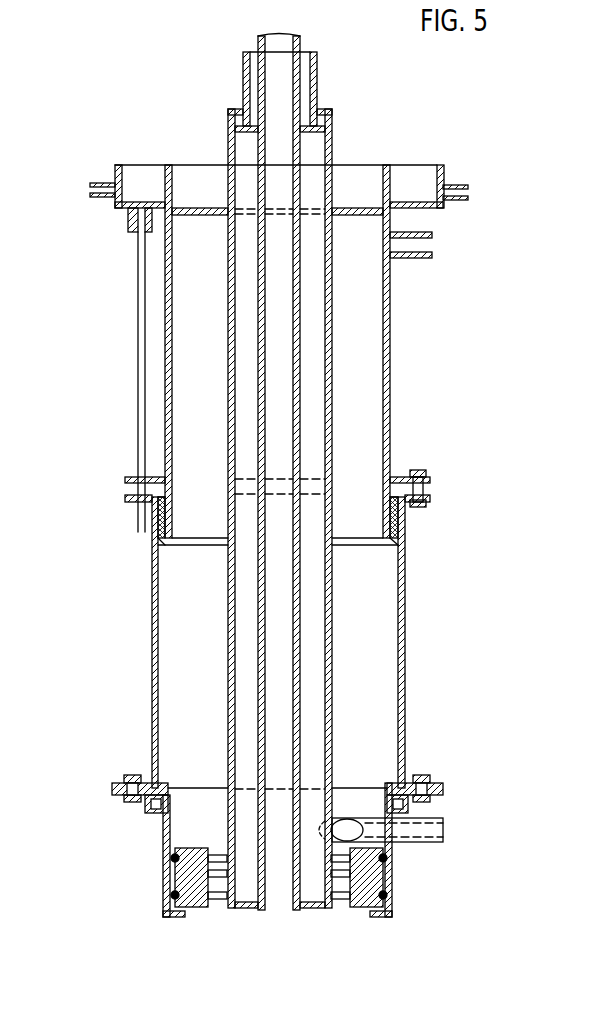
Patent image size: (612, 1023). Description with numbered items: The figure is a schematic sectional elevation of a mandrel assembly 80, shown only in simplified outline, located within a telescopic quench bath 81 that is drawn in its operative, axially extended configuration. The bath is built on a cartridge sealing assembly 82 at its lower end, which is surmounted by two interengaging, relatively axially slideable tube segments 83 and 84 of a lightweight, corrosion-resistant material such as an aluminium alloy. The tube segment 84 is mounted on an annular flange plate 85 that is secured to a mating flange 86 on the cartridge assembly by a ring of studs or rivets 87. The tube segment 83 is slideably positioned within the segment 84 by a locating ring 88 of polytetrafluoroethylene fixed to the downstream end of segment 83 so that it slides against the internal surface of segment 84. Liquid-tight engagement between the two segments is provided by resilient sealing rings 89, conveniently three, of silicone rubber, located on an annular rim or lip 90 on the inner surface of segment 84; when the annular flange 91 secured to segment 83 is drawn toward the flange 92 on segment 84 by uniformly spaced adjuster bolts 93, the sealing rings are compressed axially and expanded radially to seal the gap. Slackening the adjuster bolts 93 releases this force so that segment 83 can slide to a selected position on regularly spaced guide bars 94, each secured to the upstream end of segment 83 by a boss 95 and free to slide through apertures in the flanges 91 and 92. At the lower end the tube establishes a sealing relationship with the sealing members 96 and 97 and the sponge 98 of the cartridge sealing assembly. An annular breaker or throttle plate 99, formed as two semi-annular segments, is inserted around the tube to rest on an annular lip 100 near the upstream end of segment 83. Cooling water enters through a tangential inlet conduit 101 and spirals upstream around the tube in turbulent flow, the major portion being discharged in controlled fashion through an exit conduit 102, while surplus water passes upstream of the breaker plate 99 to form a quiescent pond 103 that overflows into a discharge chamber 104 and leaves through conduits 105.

The mandrel assembly 80 is at (337, 148).
The telescopic quench bath 81 is at (448, 400).
The cartridge sealing assembly 82 is at (462, 905).
The tube segment 83 is at (392, 337).
The tube segment 84 is at (406, 668).
The annular flange plate 85 is at (443, 789).
The mating flange 86 is at (408, 802).
The studs or rivets 87 is at (428, 776).
The locating ring 88 is at (404, 540).
The resilient sealing rings 89 is at (405, 510).
The annular rim or lip 90 is at (405, 533).
The annular flange 91 is at (130, 477).
The flange 92 is at (130, 502).
The adjuster bolts 93 is at (423, 472).
The guide bars 94 is at (138, 346).
The boss 95 is at (128, 219).
The sealing member 96 is at (387, 859).
The sealing member 97 is at (332, 874).
The sponge 98 is at (341, 905).
The annular breaker or throttle plate 99 is at (200, 222).
The annular lip 100 is at (190, 218).
The tangential inlet conduit 101 is at (444, 832).
The exit conduit 102 is at (433, 244).
The quiescent pond 103 is at (208, 182).
The discharge chamber 104 is at (417, 182).
The conduits 105 is at (90, 190).